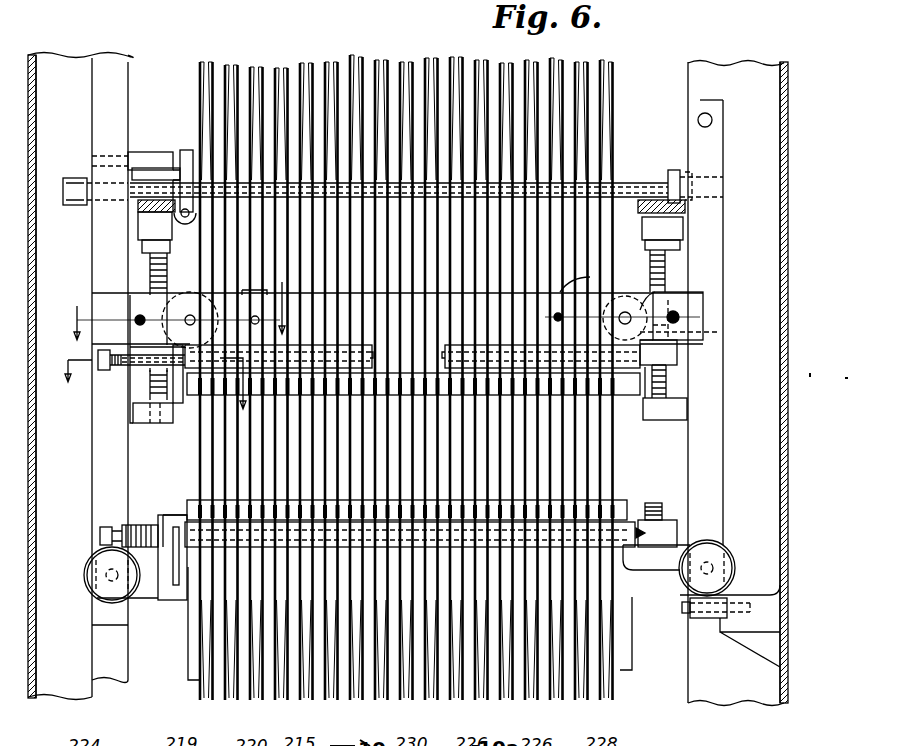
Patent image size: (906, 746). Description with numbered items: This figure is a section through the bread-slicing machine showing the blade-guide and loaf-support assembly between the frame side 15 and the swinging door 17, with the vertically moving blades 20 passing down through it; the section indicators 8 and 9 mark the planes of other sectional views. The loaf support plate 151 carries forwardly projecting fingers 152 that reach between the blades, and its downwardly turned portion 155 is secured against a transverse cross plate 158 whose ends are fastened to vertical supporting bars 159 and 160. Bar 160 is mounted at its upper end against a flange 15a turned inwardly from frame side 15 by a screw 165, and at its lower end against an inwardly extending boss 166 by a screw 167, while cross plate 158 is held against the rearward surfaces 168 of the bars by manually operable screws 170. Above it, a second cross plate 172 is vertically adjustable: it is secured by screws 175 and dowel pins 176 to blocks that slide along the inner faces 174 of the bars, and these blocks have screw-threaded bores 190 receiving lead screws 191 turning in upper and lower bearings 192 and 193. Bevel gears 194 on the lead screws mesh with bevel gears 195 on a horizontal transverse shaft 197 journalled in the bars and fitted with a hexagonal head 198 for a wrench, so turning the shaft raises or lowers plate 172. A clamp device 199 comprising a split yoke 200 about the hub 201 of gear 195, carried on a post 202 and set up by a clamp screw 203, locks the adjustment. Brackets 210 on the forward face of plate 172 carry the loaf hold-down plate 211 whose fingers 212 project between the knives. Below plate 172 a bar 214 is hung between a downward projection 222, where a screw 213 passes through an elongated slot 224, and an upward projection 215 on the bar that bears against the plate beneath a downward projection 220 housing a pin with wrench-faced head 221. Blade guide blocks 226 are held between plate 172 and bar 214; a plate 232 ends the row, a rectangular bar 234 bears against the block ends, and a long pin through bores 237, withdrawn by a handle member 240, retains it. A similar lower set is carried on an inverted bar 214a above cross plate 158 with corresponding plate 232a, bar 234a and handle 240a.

The frame side 15 is at (780, 120).
The flange 15a is at (714, 70).
The swinging door 17 is at (37, 404).
The tines 20 is at (228, 66).
The section line 8- 8 is at (178, 296).
The section line 9- 9 is at (155, 395).
The loaf support plate 151 is at (190, 498).
The forwardly projecting fingers 152 is at (198, 518).
The downwardly extending plate portion 155 is at (188, 670).
The transverse cross plate 158 is at (173, 562).
The vertical supporting bar 159 is at (88, 510).
The vertical supporting bar 160 is at (731, 474).
The screw 165 is at (698, 120).
The boss 166 is at (745, 625).
The screw 167 is at (683, 618).
The rearward surfaces 168 is at (100, 460).
The manually operable screws 170 is at (85, 583).
The upper cross plate 172 is at (135, 296).
The inner faces 174 is at (131, 84).
The manually operable screws 175 is at (650, 292).
The dowel pins 176 is at (138, 318).
The screw-threaded bores 190 is at (688, 336).
The vertical lead screws 191 is at (167, 276).
The upper bearings 192 is at (138, 230).
The lower bearings 193 is at (133, 410).
The bevel gears 194 is at (138, 206).
The bevel gears 195 is at (170, 170).
The horizontal transverse shaft 197 is at (632, 184).
The hexagonal head 198 is at (71, 179).
The clamp device 199 is at (188, 188).
The split yoke 200 is at (186, 150).
The hub 201 is at (178, 168).
The post 202 is at (140, 162).
The clamp screw 203 is at (185, 217).
The brackets 210 is at (563, 293).
The loaf hold-down plate 211 is at (566, 397).
The fingers 212 is at (580, 398).
The screw 213 is at (668, 385).
The bar 214 is at (180, 403).
The bar 214a is at (665, 515).
The upward projection 215 is at (160, 346).
The downward projection 220 is at (135, 368).
The head 221 is at (98, 357).
The downward projection 222 is at (678, 357).
The elongated slot 224 is at (663, 380).
The blade guide blocks 226 is at (380, 367).
The plate 232 is at (655, 306).
The plate 232a is at (655, 540).
The bar 234 is at (548, 399).
The bar 234a is at (632, 565).
The bores 237 is at (677, 350).
The handle member 240 is at (170, 434).
The handle member 240a is at (147, 620).